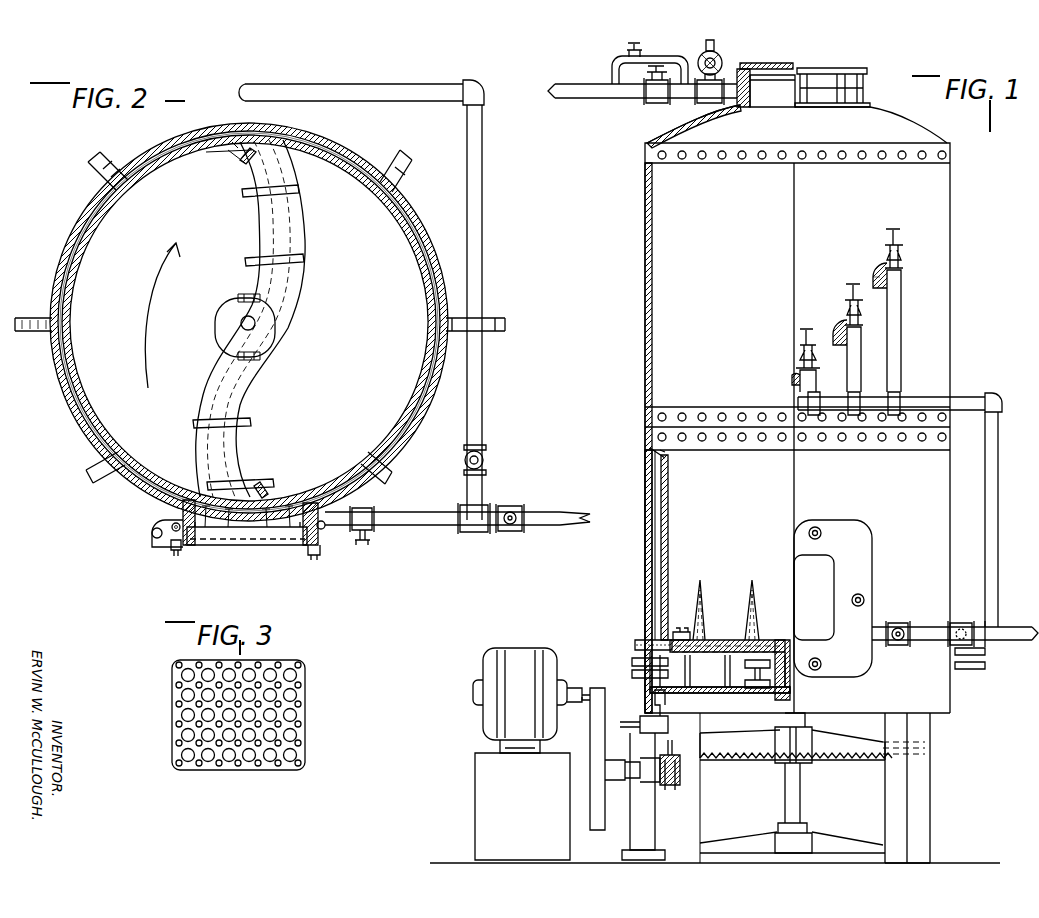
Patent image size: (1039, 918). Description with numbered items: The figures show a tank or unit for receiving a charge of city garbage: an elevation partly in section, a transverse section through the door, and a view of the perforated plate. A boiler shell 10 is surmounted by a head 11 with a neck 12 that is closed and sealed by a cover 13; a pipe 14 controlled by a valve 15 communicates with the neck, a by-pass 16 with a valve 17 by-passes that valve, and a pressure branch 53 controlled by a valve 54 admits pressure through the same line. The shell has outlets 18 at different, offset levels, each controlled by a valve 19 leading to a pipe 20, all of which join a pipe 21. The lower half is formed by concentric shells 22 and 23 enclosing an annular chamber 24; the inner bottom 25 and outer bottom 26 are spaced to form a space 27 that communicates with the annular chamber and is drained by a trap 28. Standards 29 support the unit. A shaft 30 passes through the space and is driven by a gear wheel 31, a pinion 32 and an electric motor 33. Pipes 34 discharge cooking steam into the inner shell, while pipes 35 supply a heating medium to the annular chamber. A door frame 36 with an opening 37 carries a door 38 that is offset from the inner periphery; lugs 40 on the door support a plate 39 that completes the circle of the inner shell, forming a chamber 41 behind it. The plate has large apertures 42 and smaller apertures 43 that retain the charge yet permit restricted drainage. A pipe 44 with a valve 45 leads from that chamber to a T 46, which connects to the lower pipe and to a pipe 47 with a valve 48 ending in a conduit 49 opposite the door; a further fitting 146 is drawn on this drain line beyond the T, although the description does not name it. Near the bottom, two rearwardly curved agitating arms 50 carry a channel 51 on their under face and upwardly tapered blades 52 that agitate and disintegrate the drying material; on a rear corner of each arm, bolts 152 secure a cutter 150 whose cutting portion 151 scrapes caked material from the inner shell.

In FIG. 1, the boiler shell 10 is at (940, 250).
In FIG. 1, the head 11 is at (885, 128).
In FIG. 1, the neck 12 is at (855, 92).
In FIG. 1, the cover 13 is at (835, 65).
In FIG. 1, the pipe 14 is at (700, 93).
In FIG. 1, the valve 15 is at (650, 100).
In FIG. 1, the by-pass 16 is at (655, 60).
In FIG. 1, the valve 17 is at (625, 48).
In FIG. 1, the outlets 18 is at (870, 264).
In FIG. 1, the valve 19 is at (880, 240).
In FIG. 1, the pipe 20 is at (890, 385).
In FIG. 2, the pipe 21 is at (510, 510).
In FIG. 1, the pipe 21 is at (995, 510).
In FIG. 2, the outer shell 22 is at (572, 495).
In FIG. 1, the outer shell 22 is at (1035, 605).
In FIG. 2, the inner shell 23 is at (360, 465).
In FIG. 1, the inner shell 23 is at (662, 548).
In FIG. 2, the annular chamber 24 is at (415, 445).
In FIG. 1, the annular chamber 24 is at (655, 476).
In FIG. 2, the bottom 25 is at (346, 353).
In FIG. 1, the bottom 25 is at (715, 640).
In FIG. 1, the bottom 26 is at (720, 690).
In FIG. 1, the space 27 is at (730, 688).
In FIG. 1, the trap 28 is at (642, 715).
In FIG. 1, the standards 29 is at (900, 788).
In FIG. 1, the shaft 30 is at (800, 720).
In FIG. 1, the gear wheel 31 is at (835, 750).
In FIG. 1, the pinion 32 is at (682, 780).
In FIG. 1, the electric motor 33 is at (512, 647).
In FIG. 2, the steam pipes 34 is at (410, 470).
In FIG. 1, the steam pipes 34 is at (1000, 653).
In FIG. 2, the heating pipes 35 is at (38, 316).
In FIG. 2, the door frame 36 is at (180, 505).
In FIG. 2, the opening 37 is at (172, 525).
In FIG. 2, the door 38 is at (212, 545).
In FIG. 1, the door 38 is at (864, 562).
In FIG. 2, the plate 39 is at (270, 545).
In FIG. 3, the plate 39 is at (300, 740).
In FIG. 2, the lugs 40 is at (246, 545).
In FIG. 2, the chamber 41 is at (310, 548).
In FIG. 3, the large apertures 42 is at (296, 676).
In FIG. 3, the small apertures 43 is at (301, 705).
In FIG. 2, the pipe 44 is at (422, 524).
In FIG. 1, the pipe 44 is at (927, 640).
In FIG. 2, the valve 45 is at (365, 533).
In FIG. 1, the valve 45 is at (900, 626).
In FIG. 2, the T 46 is at (472, 530).
In FIG. 1, the T 46 is at (955, 624).
In FIG. 2, the pipe 47 is at (478, 405).
In FIG. 1, the pipe 47 is at (965, 625).
In FIG. 2, the valve 48 is at (484, 458).
In FIG. 2, the conduit 49 is at (250, 93).
In FIG. 2, the agitating arms 50 is at (262, 400).
In FIG. 2, the channel 51 is at (285, 262).
In FIG. 2, the blades 52 is at (272, 478).
In FIG. 1, the pressure branch 53 is at (720, 82).
In FIG. 1, the valve 54 is at (720, 54).
In FIG. 2, the valve 146 is at (504, 531).
In FIG. 2, the cutter 150 is at (205, 490).
In FIG. 1, the cutter 150 is at (675, 632).
In FIG. 2, the cutting portion 151 is at (300, 488).
In FIG. 1, the cutting portion 151 is at (663, 632).
In FIG. 2, the bolts 152 is at (310, 470).
In FIG. 1, the bolts 152 is at (687, 630).